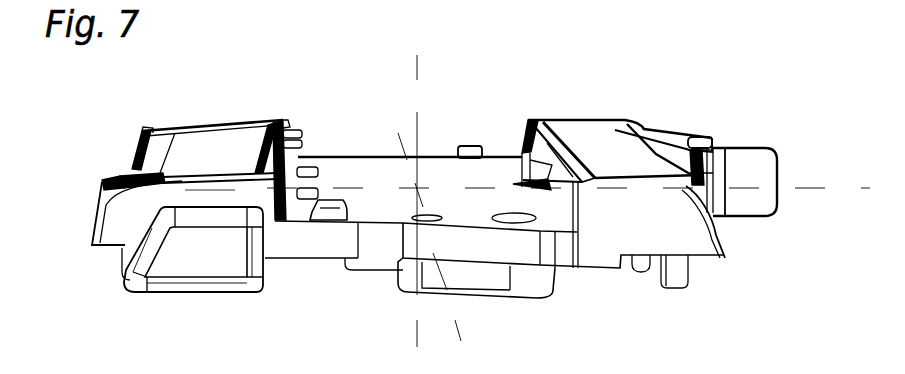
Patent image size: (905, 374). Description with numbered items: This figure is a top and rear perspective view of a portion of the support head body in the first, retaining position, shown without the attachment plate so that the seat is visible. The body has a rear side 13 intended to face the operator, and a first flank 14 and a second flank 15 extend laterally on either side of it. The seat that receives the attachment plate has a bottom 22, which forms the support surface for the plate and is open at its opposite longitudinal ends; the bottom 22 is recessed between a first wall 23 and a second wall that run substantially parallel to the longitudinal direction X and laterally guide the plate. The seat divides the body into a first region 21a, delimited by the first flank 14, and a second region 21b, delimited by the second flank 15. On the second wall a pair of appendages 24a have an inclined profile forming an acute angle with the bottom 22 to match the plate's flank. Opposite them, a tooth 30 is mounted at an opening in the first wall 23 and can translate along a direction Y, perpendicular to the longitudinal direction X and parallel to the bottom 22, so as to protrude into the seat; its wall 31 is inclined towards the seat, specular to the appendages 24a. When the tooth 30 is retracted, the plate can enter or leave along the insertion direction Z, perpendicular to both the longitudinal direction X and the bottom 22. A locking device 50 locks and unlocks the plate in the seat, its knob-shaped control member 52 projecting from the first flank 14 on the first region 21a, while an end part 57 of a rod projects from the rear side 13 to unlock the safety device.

The rear side 13 is at (333, 245).
The first flank 14 is at (723, 240).
The second flank 15 is at (133, 168).
The first region 21a is at (595, 135).
The second region 21b is at (216, 135).
The bottom 22 is at (367, 158).
The first wall 23 is at (570, 202).
The appendages 24a is at (294, 134).
The tooth 30 is at (545, 153).
The wall 31 is at (525, 175).
The locking device 50 is at (740, 137).
The control member 52 is at (757, 180).
The end part 57 is at (197, 268).
The longitudinal direction X is at (455, 323).
The direction Y is at (824, 190).
The insertion direction Z is at (417, 112).